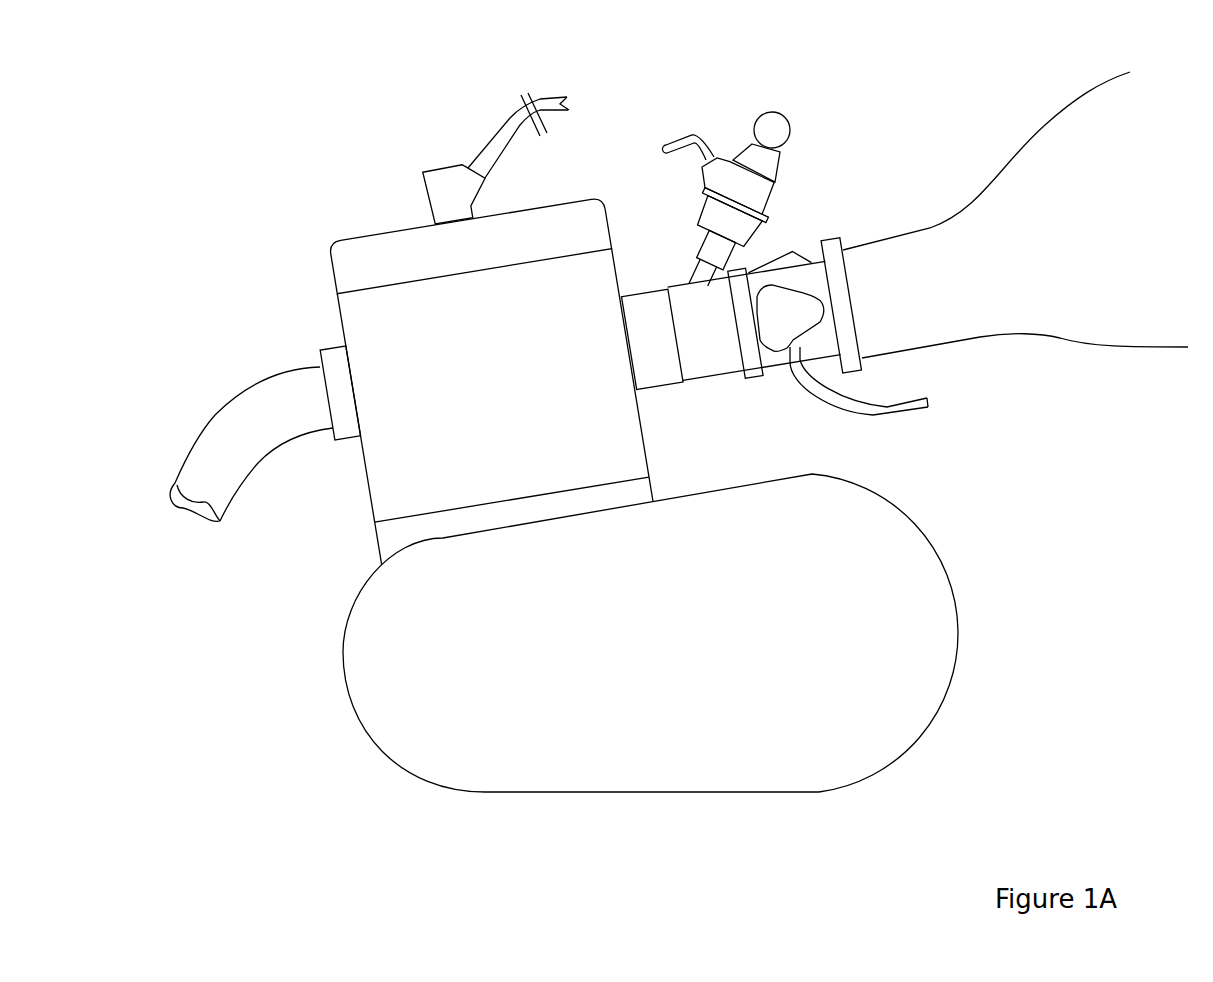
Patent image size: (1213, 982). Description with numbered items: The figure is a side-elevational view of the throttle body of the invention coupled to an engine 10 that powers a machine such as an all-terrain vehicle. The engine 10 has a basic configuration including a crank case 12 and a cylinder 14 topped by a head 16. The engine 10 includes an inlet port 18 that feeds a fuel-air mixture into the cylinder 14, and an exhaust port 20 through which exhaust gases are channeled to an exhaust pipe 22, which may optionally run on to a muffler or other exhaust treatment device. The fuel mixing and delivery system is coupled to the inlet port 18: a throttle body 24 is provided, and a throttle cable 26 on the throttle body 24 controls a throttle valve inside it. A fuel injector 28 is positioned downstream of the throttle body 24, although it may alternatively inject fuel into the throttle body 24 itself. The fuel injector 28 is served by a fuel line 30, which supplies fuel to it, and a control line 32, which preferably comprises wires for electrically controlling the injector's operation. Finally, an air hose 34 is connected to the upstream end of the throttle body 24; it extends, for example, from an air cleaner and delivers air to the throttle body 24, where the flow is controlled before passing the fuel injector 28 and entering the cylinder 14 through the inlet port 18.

The engine 10 is at (296, 711).
The crank case 12 is at (905, 683).
The cylinder 14 is at (382, 482).
The head 16 is at (397, 248).
The inlet port 18 is at (643, 312).
The exhaust port 20 is at (333, 360).
The exhaust pipe 22 is at (222, 488).
The throttle body 24 is at (813, 262).
The throttle cable 26 is at (830, 400).
The fuel injector 28 is at (735, 180).
The fuel line 30 is at (773, 127).
The control line 32 is at (680, 133).
The air hose 34 is at (1080, 302).